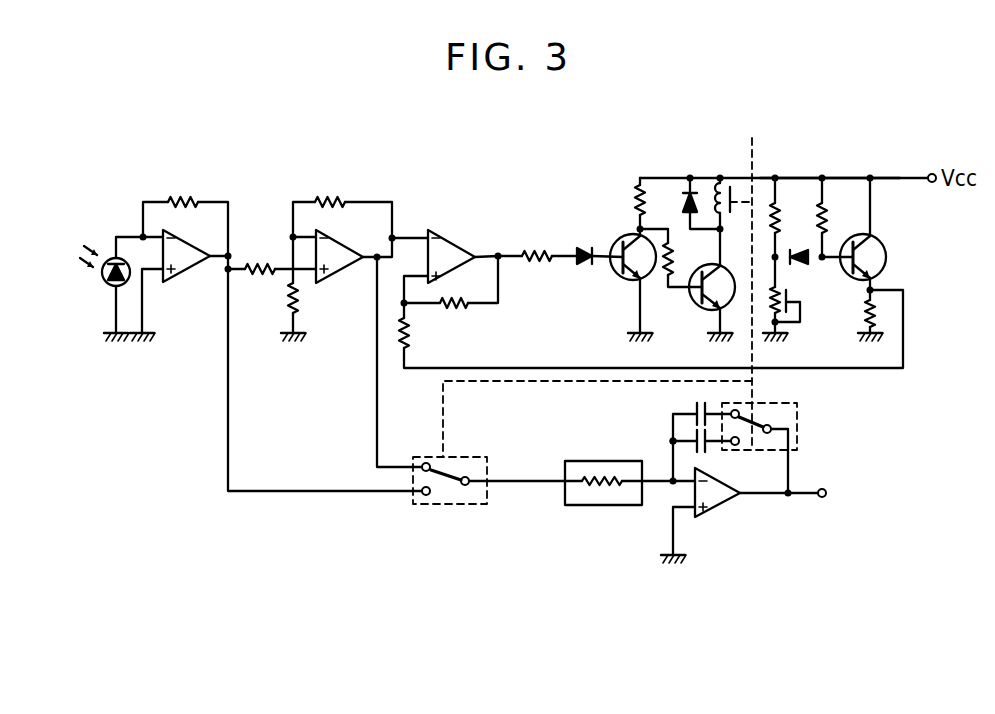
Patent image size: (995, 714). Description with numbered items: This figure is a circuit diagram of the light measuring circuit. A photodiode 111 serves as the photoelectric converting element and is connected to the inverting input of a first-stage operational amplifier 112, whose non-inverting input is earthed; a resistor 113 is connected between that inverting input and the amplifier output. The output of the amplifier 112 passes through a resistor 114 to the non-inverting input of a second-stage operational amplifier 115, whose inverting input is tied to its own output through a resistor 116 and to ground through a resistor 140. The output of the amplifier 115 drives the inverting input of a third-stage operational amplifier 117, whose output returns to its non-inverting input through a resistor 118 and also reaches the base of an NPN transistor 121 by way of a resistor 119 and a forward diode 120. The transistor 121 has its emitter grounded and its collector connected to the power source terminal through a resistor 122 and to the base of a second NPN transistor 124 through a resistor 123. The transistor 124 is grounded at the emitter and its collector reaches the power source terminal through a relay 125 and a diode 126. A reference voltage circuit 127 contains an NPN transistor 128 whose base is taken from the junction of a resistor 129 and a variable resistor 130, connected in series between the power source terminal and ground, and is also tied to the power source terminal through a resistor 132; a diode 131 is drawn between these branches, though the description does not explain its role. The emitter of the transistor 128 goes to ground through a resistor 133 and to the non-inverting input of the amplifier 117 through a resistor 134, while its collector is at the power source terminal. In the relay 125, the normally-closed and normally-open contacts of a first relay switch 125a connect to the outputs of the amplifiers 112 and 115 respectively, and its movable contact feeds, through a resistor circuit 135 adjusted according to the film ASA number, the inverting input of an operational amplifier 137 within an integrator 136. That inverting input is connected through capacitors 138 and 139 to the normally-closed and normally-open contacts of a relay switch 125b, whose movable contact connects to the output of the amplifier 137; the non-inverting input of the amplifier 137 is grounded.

The photodiode 111 is at (108, 284).
The operational amplifier 112 is at (183, 275).
The resistor 113 is at (180, 197).
The resistor 114 is at (260, 263).
The operational amplifier 115 is at (340, 275).
The resistor 116 is at (330, 197).
The operational amplifier 117 is at (459, 237).
The resistor 118 is at (451, 306).
The resistor 119 is at (529, 253).
The forward diode 120 is at (585, 265).
The NPN transistor 121 is at (629, 238).
The resistor 122 is at (635, 199).
The resistor 123 is at (673, 261).
The NPN transistor 124 is at (695, 297).
The relay 125 is at (724, 179).
The first relay switch 125a is at (455, 505).
The relay switch 125b is at (797, 409).
The diode 126 is at (687, 190).
The reference voltage circuit 127 is at (822, 171).
The NPN transistor 128 is at (886, 247).
The resistor 129 is at (779, 212).
The variable resistor 130 is at (780, 287).
The diode 131 is at (801, 251).
The resistor 132 is at (828, 212).
The resistor 133 is at (866, 312).
The resistor 134 is at (405, 341).
The resistor circuit 135 is at (608, 461).
The integrator 136 is at (664, 437).
The operational amplifier 137 is at (714, 511).
The capacitor 138 is at (698, 401).
The capacitor 139 is at (704, 451).
The resistor 140 is at (287, 297).